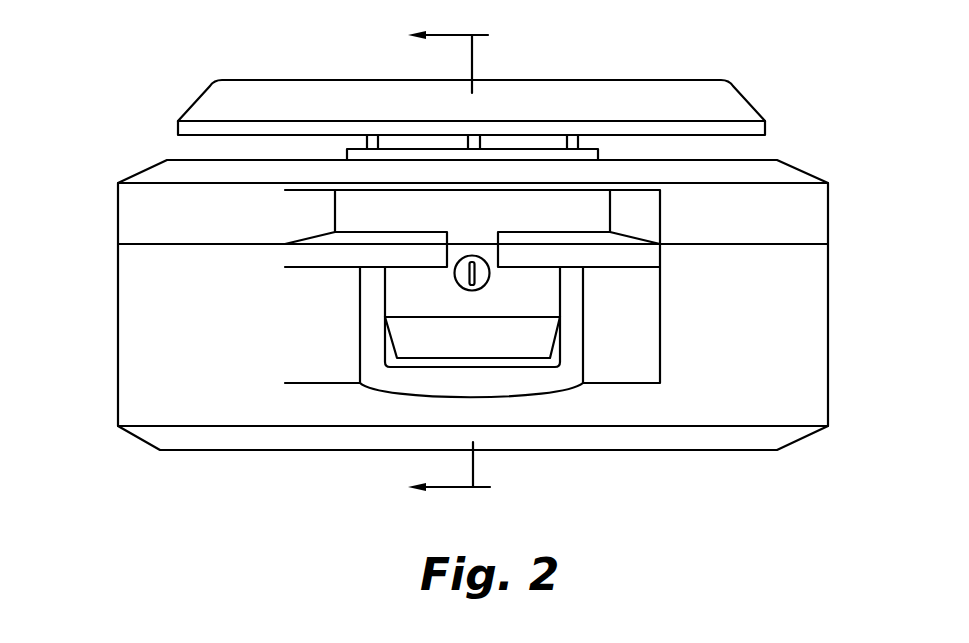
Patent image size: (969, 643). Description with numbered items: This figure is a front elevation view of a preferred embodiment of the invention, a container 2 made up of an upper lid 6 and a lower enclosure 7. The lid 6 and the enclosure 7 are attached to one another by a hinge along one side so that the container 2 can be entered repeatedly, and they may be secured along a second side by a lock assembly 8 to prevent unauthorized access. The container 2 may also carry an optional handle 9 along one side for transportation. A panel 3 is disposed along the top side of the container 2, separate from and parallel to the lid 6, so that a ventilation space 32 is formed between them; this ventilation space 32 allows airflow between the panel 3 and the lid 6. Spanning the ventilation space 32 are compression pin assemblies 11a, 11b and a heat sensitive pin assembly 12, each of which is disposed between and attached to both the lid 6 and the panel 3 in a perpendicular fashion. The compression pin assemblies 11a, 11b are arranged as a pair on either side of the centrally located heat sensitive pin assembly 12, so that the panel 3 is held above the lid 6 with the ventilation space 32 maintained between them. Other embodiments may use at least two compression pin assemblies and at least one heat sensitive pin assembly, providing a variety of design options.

The container 2 is at (828, 302).
The panel 3 is at (735, 92).
The upper lid 6 is at (118, 217).
The lower enclosure 7 is at (118, 328).
The lock assembly 8 is at (508, 288).
The handle 9 is at (373, 377).
The compression pin assembly 11a is at (367, 136).
The compression pin assembly 11b is at (580, 137).
The heat sensitive pin assembly 12 is at (480, 136).
The ventilation space 32 is at (773, 135).